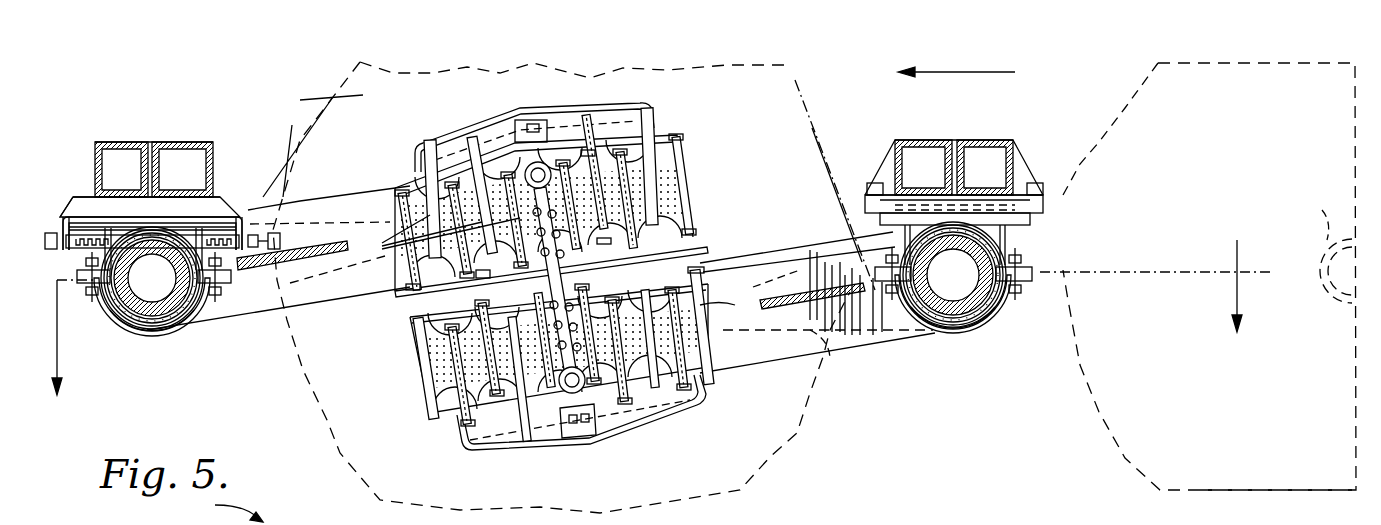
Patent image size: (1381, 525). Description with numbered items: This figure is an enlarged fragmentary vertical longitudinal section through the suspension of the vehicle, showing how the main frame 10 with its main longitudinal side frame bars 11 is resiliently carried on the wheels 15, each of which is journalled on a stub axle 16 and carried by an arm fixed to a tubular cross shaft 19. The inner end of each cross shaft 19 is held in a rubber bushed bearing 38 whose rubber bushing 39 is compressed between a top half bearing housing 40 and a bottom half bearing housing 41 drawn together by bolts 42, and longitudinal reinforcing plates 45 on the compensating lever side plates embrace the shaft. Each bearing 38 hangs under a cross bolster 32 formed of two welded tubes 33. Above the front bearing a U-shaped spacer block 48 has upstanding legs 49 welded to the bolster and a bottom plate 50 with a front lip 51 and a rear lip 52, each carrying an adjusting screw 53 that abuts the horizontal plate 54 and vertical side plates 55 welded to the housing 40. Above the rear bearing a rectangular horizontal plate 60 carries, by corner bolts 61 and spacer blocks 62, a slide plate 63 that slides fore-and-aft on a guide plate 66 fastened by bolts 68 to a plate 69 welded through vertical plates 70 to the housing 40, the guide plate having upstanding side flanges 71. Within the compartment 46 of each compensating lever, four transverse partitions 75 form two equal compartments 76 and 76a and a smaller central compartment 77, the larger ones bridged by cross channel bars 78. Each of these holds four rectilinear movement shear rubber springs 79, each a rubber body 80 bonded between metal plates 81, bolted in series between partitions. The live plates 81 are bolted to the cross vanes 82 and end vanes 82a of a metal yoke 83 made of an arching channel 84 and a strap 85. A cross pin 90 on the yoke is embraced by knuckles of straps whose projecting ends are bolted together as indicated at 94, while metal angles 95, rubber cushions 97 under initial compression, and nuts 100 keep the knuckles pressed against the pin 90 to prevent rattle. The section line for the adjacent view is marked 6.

The section view direction arrow 6 is at (657, 323).
The main frame 10 is at (227, 507).
The main longitudinal side frame bars 11 is at (1068, 522).
The wheels 15 is at (765, 478).
The stub axle 16 is at (1325, 245).
The cross shaft 19 is at (170, 320).
The cross bolster 32 is at (190, 120).
The tubes 33 is at (118, 142).
The bearing 38 is at (162, 334).
The rubber bushing 39 is at (142, 327).
The top half bearing housing 40 is at (85, 276).
The bottom half bearing housing 41 is at (210, 322).
The bolts 42 is at (92, 300).
The longitudinal reinforcing plates 45 is at (280, 312).
The compartment 46 is at (332, 200).
The spacer block 48 is at (246, 189).
The upstanding legs 49 is at (88, 197).
The bottom plate 50 is at (218, 225).
The front lip 51 is at (66, 219).
The rear lip 52 is at (287, 212).
The adjusting screw 53 is at (90, 233).
The horizontal plate 54 is at (183, 235).
The vertical side plates 55 is at (130, 262).
The rectangular horizontal plate 60 is at (1032, 193).
The corner bolts 61 is at (875, 183).
The spacer blocks 62 is at (832, 195).
The slide plate 63 is at (1045, 205).
The guide plate 66 is at (1042, 212).
The bolts 68 is at (1042, 220).
The plate 69 is at (893, 232).
The vertical plates 70 is at (880, 238).
The upstanding side flanges 71 is at (978, 207).
The transverse partitions 75 is at (400, 278).
The compartment 76 is at (690, 225).
The compartment 76a is at (690, 250).
The compartment 77 is at (546, 274).
The cross channel bars 78 is at (480, 278).
The rectilinear movement shear rubber springs 79 is at (675, 160).
The rubber body 80 is at (726, 303).
The metal plates 81 is at (690, 172).
The transverse fins or cross vanes 82 is at (452, 160).
The end vanes 82a is at (425, 167).
The metal yoke 83 is at (658, 98).
The arching metal channel 84 is at (482, 128).
The metal strap 85 is at (445, 130).
The cross pin 90 is at (573, 388).
The bolted connection 94 is at (575, 268).
The metal angles 95 is at (530, 163).
The rubber cushions 97 is at (615, 465).
The nut 100 is at (542, 120).